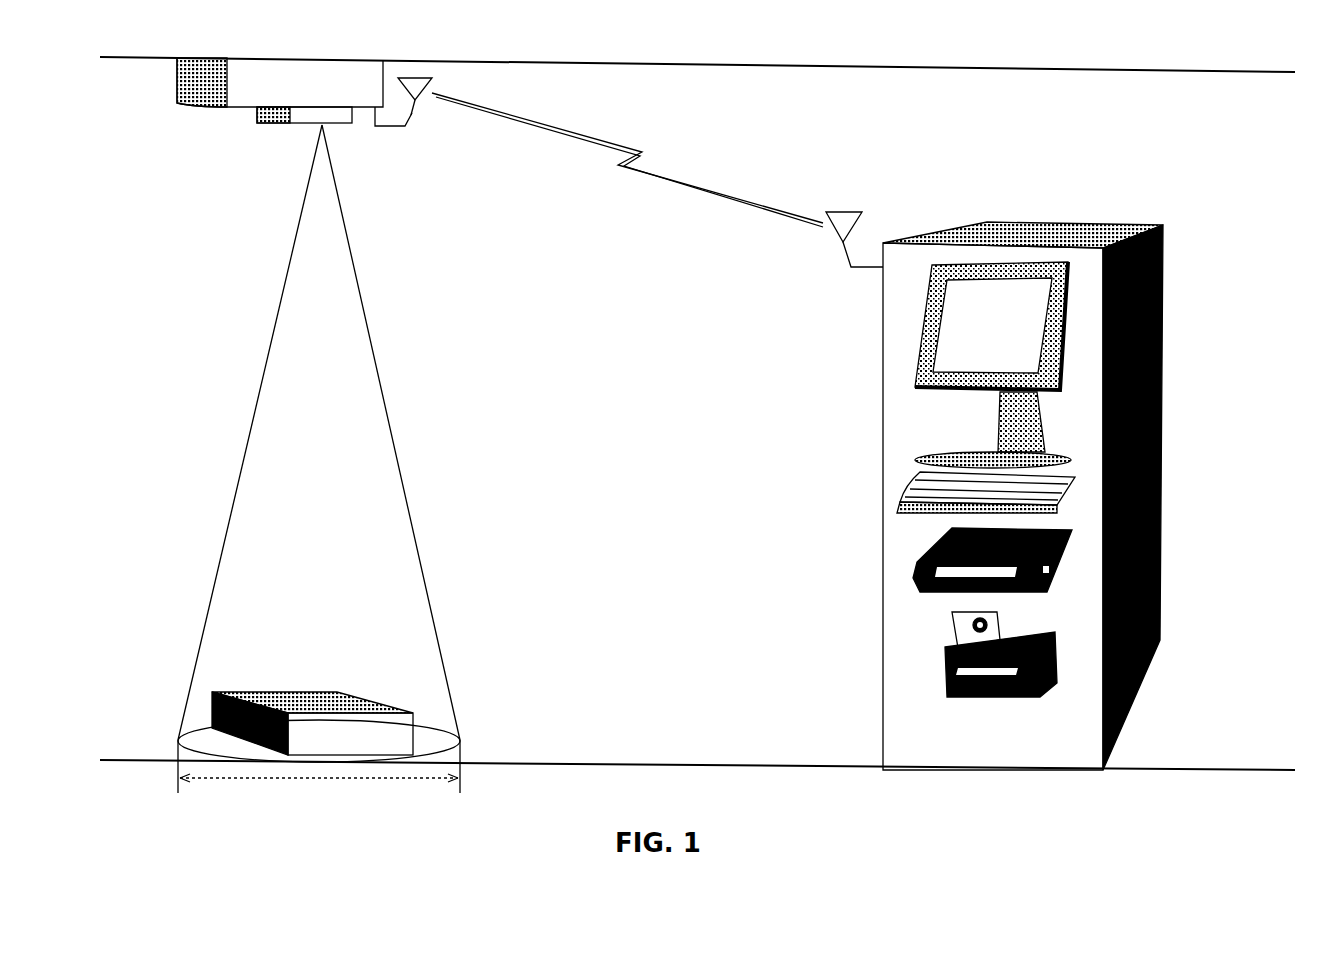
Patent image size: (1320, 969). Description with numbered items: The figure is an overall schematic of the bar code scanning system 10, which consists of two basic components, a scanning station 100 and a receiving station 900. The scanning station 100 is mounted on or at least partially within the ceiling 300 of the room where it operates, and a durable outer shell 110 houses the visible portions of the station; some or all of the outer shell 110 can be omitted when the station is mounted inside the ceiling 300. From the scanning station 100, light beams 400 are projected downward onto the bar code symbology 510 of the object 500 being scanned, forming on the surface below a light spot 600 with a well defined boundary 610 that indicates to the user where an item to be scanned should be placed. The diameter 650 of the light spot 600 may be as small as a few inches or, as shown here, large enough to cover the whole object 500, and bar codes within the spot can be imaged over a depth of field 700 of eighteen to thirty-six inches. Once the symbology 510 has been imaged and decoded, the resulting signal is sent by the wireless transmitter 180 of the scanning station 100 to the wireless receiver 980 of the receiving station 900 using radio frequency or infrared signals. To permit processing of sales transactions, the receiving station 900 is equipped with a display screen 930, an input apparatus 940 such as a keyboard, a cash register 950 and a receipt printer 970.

The bar code scanning system 10 is at (678, 710).
The scanning station 100 is at (200, 103).
The outer shell 110 is at (240, 110).
The wireless transmitter 180 is at (410, 115).
The ceiling 300 is at (565, 63).
The light beams 400 is at (311, 176).
The object 500 is at (212, 700).
The bar code symbology 510 is at (308, 695).
The light spot 600 is at (444, 748).
The boundary 610 is at (420, 716).
The diameter 650 is at (318, 780).
The depth of field 700 is at (648, 175).
The receiving station 900 is at (1160, 248).
The display screen 930 is at (1042, 323).
The input apparatus 940 is at (1020, 468).
The cash register 950 is at (1000, 545).
The receipt printer 970 is at (1057, 638).
The wireless receiver 980 is at (828, 245).